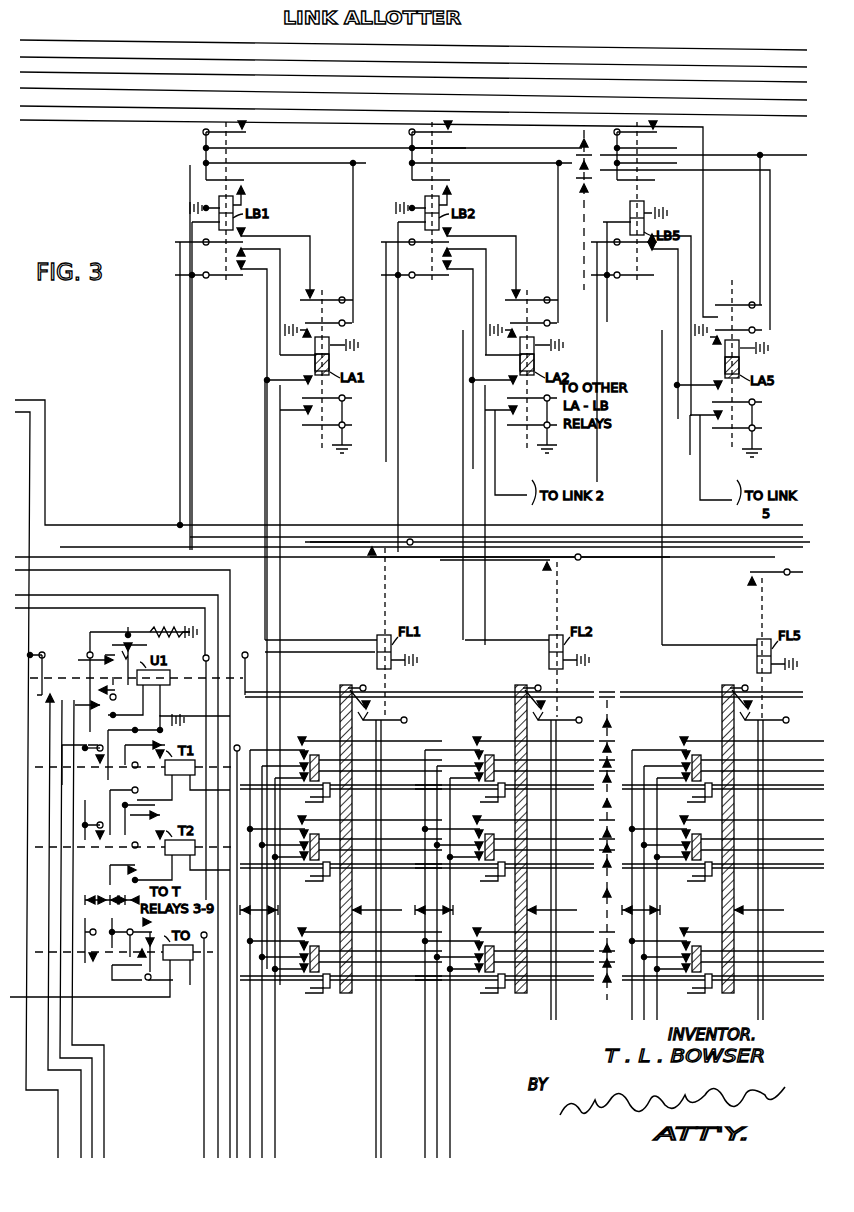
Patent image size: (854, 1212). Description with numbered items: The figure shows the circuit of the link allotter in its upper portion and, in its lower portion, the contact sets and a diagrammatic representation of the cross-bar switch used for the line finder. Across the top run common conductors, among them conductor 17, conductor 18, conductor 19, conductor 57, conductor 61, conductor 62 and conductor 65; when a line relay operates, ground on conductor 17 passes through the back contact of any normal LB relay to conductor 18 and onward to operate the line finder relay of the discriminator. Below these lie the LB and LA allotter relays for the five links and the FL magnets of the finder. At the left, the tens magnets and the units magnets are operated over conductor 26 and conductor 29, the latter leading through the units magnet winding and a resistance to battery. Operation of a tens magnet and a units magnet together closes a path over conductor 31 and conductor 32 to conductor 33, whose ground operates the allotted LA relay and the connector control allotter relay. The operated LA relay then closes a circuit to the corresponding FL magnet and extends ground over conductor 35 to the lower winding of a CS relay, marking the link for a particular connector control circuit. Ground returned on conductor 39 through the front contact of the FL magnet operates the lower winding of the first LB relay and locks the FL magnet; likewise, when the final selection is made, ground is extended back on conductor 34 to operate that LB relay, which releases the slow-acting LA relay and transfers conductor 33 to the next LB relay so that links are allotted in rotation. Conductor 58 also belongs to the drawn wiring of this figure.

The conductor 17 is at (74, 122).
The conductor 18 is at (784, 157).
The conductor 19 is at (34, 107).
The conductor 26 is at (38, 598).
The conductor / resistance 29 is at (145, 628).
The conductor 31 is at (80, 1135).
The conductor 32 is at (30, 394).
The conductor 33 is at (47, 403).
The conductor 34 is at (192, 355).
The conductor 35 is at (692, 526).
The conductor 39 is at (690, 556).
The conductor 57 is at (90, 40).
The conductor 58 is at (34, 608).
The conductor 61 is at (40, 92).
The conductor 62 is at (40, 75).
The conductor 65 is at (40, 56).